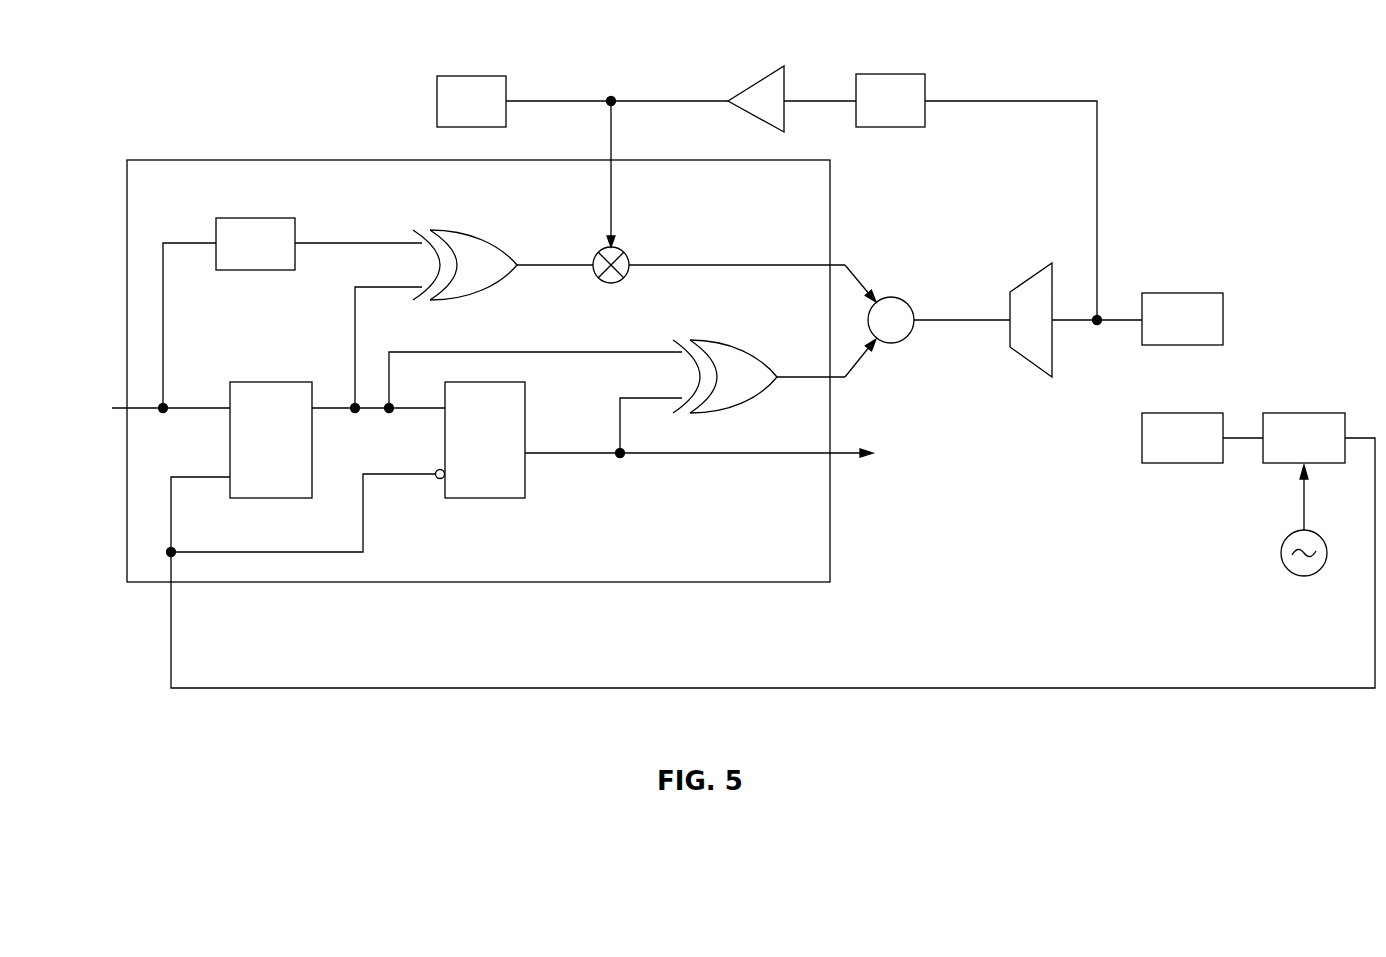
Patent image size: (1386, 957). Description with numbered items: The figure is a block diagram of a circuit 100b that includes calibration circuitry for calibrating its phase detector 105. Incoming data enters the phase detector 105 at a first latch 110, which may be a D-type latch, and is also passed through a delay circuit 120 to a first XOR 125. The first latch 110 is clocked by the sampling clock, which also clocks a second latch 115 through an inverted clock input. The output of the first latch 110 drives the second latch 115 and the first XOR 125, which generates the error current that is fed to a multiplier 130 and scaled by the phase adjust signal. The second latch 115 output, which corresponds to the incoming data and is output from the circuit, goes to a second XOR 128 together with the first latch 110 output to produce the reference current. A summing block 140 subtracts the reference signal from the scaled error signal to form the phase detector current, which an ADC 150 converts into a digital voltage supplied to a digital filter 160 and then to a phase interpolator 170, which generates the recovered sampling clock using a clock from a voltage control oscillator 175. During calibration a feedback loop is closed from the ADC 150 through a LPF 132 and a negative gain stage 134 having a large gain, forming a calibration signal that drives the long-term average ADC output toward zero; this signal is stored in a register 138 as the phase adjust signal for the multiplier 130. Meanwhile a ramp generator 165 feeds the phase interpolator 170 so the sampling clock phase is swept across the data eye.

The circuit 100b is at (1192, 103).
The phase detector 105 is at (478, 350).
The first latch 110 is at (421, 370).
The second latch 115 is at (425, 469).
The delay circuit 120 is at (319, 224).
The first XOR 125 is at (503, 249).
The second XOR 128 is at (759, 363).
The multiplier 130 is at (719, 192).
The LPF 132 is at (922, 81).
The negative gain stage 134 is at (793, 85).
The register 138 is at (582, 83).
The summing block 140 is at (927, 319).
The ADC 150 is at (1050, 305).
The digital filter 160 is at (1171, 301).
The ramp generator 165 is at (1188, 420).
The phase interpolator 170 is at (1286, 420).
The voltage control oscillator 175 is at (1276, 520).